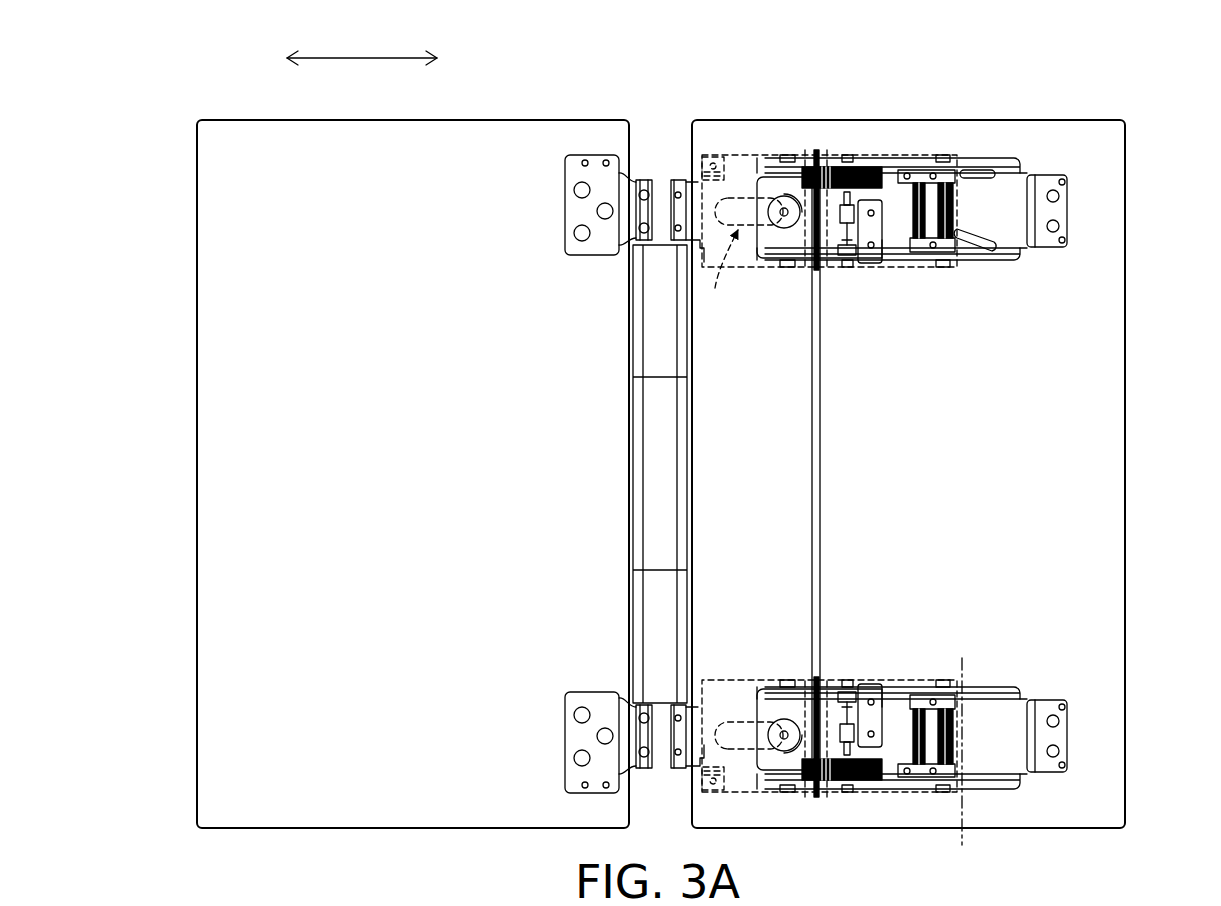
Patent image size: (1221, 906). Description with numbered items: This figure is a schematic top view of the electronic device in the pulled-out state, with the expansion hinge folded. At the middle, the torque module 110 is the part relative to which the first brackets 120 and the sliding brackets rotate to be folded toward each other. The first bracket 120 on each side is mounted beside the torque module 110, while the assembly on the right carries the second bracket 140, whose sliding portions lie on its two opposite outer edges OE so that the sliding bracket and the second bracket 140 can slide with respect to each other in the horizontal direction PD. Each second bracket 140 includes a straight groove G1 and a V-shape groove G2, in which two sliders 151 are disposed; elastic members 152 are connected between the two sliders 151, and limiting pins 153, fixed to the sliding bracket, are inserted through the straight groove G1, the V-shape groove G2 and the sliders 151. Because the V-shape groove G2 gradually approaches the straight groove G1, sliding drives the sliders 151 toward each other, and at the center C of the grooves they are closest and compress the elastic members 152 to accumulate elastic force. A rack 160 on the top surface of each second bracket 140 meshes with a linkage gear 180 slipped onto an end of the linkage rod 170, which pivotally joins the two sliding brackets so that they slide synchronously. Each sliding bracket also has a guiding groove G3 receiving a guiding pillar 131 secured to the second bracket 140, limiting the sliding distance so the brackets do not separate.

The torque module 110 is at (658, 263).
The first bracket 120 is at (575, 210).
The guiding pillar 131 is at (784, 218).
The second bracket 140 is at (1025, 185).
The slider 151 is at (920, 168).
The elastic member 152 is at (957, 250).
The limiting pin 153 is at (933, 170).
The rack 160 is at (837, 167).
The linkage rod 170 is at (822, 500).
The linkage gear 180 is at (812, 158).
The straight groove G1 is at (978, 166).
The V-shape groove G2 is at (982, 250).
The guiding groove G3 is at (719, 288).
The outer edge OE is at (998, 681).
The center C is at (960, 773).
The horizontal direction PD is at (362, 43).